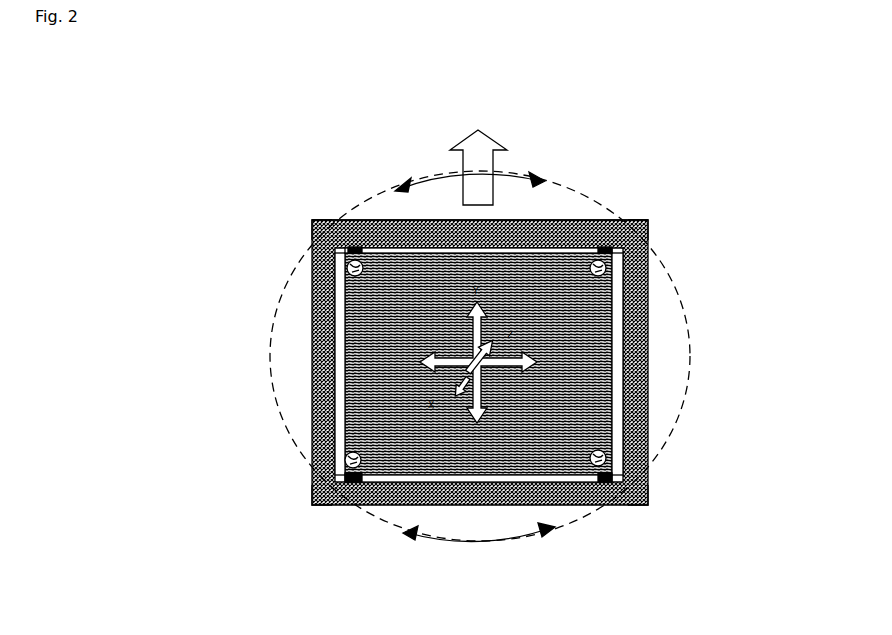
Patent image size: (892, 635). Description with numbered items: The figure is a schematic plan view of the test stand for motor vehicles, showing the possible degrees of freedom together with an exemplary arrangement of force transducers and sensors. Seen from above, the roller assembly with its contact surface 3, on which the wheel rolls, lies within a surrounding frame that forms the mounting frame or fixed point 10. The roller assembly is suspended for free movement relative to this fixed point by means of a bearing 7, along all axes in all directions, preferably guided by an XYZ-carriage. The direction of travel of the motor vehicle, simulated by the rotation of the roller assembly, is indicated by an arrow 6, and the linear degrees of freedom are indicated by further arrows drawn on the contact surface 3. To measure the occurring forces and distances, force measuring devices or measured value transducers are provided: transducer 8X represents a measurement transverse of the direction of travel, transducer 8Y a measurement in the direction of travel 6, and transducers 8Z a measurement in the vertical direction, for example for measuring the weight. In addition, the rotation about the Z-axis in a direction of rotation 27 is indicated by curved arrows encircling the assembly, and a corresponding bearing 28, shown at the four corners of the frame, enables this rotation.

The contact surface 3 is at (558, 270).
The arrow indicating direction of travel 6 is at (482, 180).
The bearing 7 is at (312, 493).
The measured value transducer for transverse measurement 8X is at (312, 378).
The measured value transducer for travel-direction measurement 8Y is at (505, 505).
The measured value transducer for vertical measurement 8Z is at (347, 267).
The mounting frame or fixed point 10 is at (360, 220).
The direction of rotation 27 is at (398, 190).
The bearing 28 is at (312, 236).